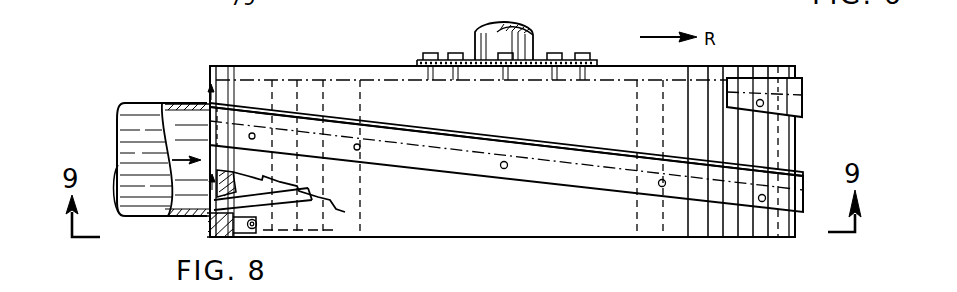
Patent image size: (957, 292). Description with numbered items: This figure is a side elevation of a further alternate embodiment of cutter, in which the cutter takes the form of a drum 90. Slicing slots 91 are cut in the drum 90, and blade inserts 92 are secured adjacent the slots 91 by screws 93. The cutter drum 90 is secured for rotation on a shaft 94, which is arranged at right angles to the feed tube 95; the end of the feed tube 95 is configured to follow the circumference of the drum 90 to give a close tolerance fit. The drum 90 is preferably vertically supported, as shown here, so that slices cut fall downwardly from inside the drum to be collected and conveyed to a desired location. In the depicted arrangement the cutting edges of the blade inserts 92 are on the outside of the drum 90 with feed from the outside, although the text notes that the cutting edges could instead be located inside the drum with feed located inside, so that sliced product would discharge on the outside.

The drum 90 is at (698, 82).
The slicing slots 91 is at (760, 166).
The blade inserts 92 is at (428, 158).
The screws 93 is at (210, 220).
The shaft 94 is at (535, 40).
The feed tube 95 is at (143, 110).